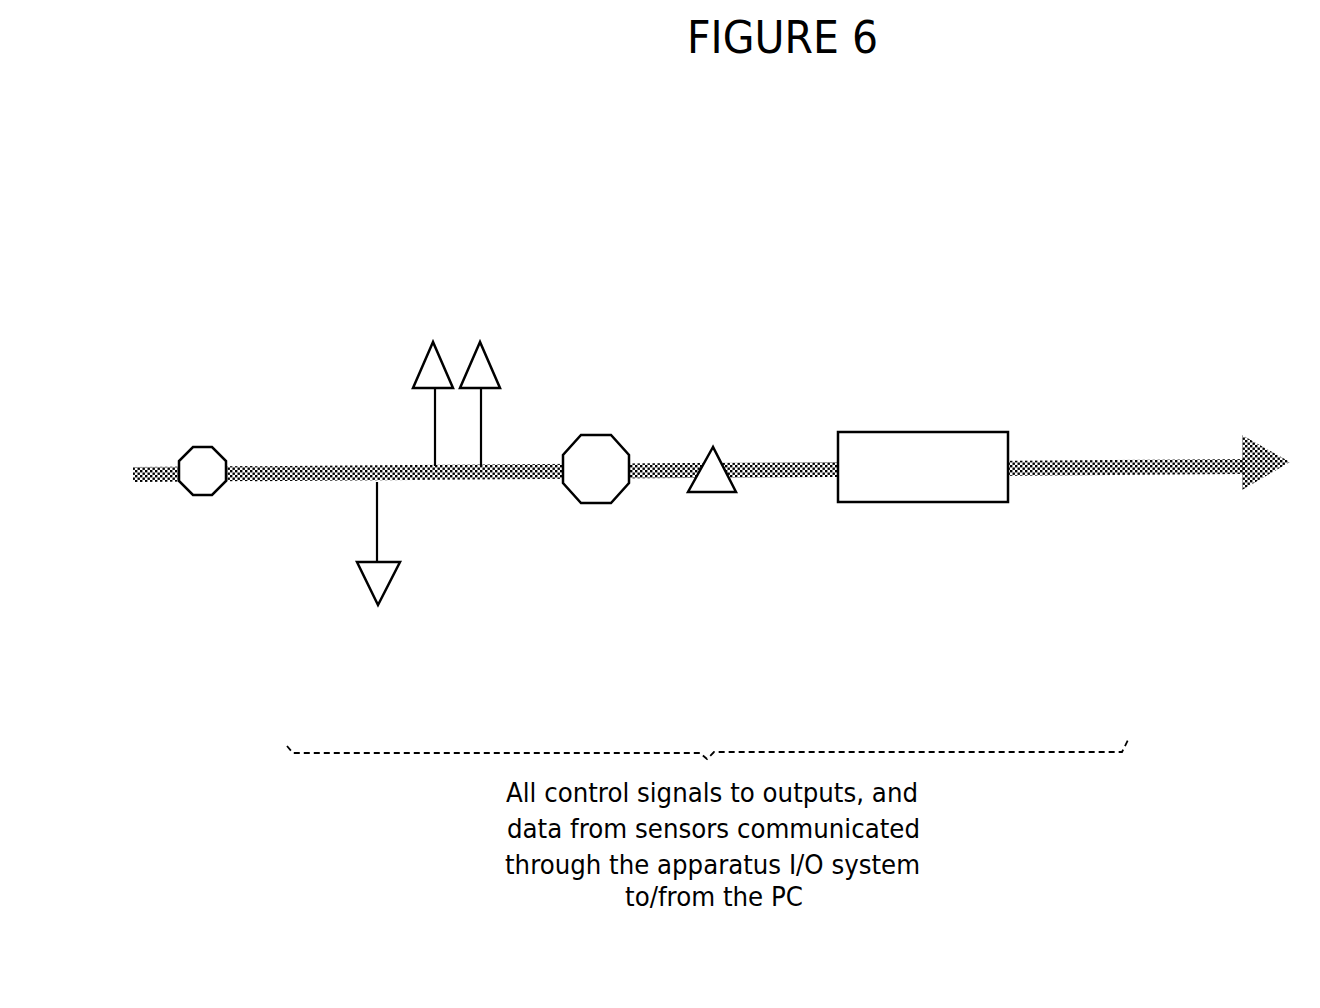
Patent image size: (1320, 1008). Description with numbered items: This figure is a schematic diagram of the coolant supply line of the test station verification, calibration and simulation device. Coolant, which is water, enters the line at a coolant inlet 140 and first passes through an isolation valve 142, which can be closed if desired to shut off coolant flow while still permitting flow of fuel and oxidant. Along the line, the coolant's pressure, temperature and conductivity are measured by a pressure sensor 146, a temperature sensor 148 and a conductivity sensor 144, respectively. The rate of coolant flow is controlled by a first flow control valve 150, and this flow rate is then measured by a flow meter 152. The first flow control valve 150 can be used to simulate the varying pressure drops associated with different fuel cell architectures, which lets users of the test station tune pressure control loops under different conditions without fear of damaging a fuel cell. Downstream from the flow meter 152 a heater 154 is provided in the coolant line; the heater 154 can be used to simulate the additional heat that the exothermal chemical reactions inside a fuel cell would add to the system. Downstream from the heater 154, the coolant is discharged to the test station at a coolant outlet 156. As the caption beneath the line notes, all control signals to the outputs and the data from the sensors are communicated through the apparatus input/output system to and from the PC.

The coolant inlet 140 is at (142, 463).
The isolation valve 142 is at (204, 447).
The conductivity sensor 144 is at (365, 582).
The pressure sensor 146 is at (425, 369).
The temperature sensor 148 is at (490, 372).
The first flow control valve 150 is at (604, 435).
The flow meter 152 is at (723, 462).
The heater 154 is at (920, 432).
The coolant outlet 156 is at (1263, 478).